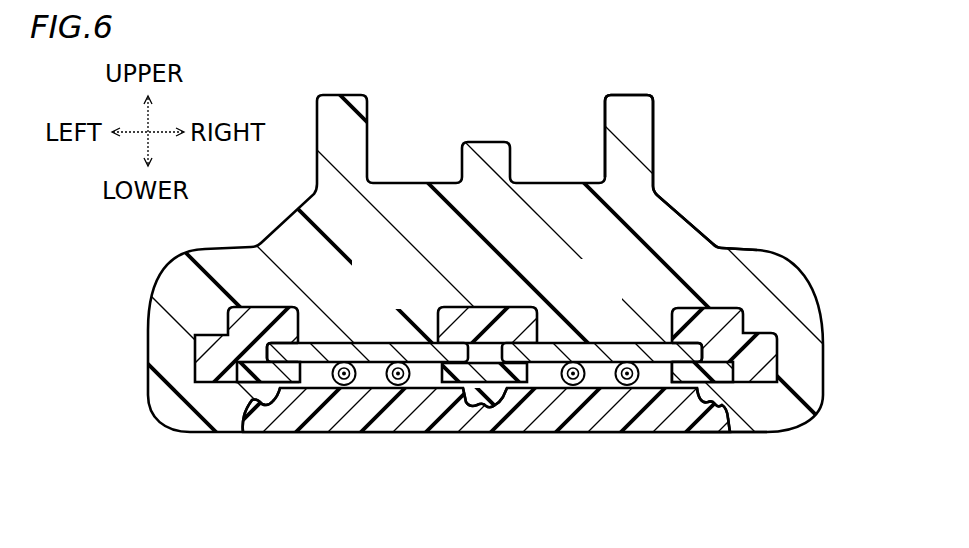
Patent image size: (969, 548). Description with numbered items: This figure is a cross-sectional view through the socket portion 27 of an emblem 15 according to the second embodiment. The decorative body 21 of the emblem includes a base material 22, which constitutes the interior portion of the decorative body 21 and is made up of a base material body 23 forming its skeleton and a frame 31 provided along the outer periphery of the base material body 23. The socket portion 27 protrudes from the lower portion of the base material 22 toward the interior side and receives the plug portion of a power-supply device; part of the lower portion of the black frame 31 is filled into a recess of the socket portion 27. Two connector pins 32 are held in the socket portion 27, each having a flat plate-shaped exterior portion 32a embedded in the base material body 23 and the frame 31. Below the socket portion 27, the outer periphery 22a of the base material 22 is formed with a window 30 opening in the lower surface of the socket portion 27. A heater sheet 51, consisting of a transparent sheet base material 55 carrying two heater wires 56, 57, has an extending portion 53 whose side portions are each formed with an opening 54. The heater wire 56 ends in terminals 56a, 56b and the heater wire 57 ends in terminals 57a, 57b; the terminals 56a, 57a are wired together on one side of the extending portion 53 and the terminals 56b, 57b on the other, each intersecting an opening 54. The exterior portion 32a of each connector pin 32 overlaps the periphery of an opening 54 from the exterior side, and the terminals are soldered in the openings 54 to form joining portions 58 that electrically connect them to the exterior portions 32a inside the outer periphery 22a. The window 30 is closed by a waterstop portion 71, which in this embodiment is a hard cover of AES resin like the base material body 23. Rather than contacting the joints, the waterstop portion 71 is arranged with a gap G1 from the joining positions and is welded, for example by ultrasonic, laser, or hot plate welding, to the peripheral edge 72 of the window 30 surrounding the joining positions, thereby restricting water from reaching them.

The base material body 23 is at (682, 215).
The decorative body 21 is at (459, 265).
The base material 22 is at (459, 265).
The socket portion 27 is at (708, 152).
The emblem 15 is at (681, 172).
The outer periphery 22a is at (681, 172).
The frame 31 is at (200, 348).
The connector pin 32 is at (484, 353).
The exterior portion 32a is at (600, 345).
The opening 54 is at (327, 364).
The gap G1 is at (432, 376).
The sheet base material 55 is at (240, 390).
The heater sheet 51 is at (493, 372).
The extending portion 53 is at (493, 372).
The terminal 56a is at (338, 384).
The terminal 56b is at (640, 384).
The heater wire 56 is at (344, 373).
The terminal 57a is at (402, 384).
The terminal 57b is at (567, 384).
The heater wire 57 is at (398, 373).
The joining portion 58 is at (352, 384).
The waterstop portion 71 is at (507, 432).
The peripheral edge 72 is at (258, 410).
The window 30 is at (720, 432).